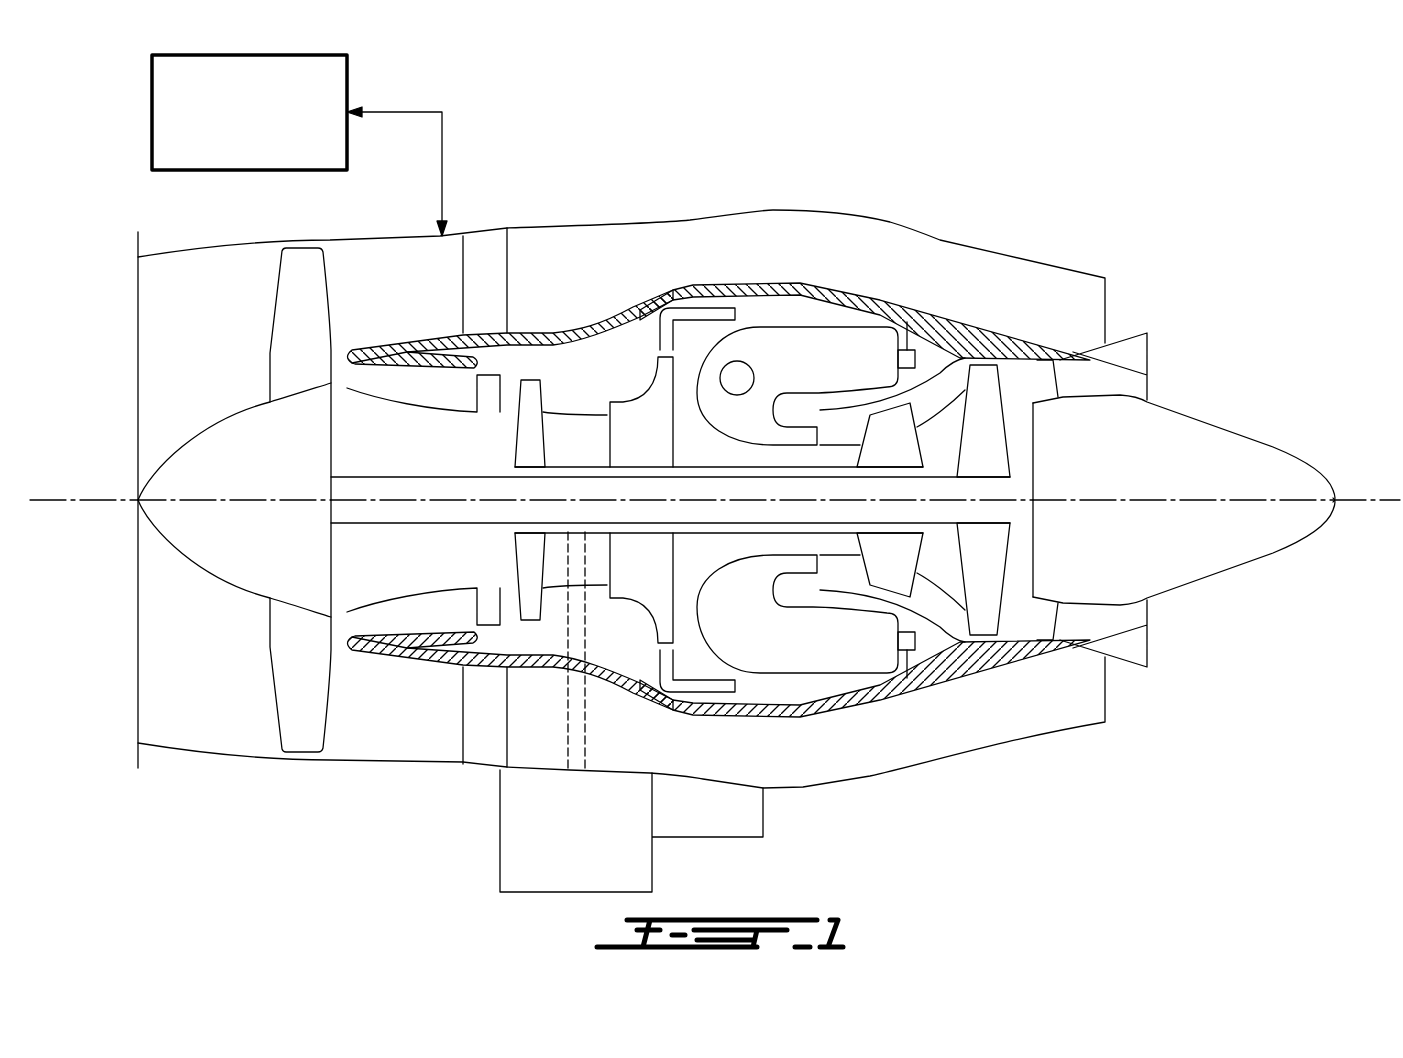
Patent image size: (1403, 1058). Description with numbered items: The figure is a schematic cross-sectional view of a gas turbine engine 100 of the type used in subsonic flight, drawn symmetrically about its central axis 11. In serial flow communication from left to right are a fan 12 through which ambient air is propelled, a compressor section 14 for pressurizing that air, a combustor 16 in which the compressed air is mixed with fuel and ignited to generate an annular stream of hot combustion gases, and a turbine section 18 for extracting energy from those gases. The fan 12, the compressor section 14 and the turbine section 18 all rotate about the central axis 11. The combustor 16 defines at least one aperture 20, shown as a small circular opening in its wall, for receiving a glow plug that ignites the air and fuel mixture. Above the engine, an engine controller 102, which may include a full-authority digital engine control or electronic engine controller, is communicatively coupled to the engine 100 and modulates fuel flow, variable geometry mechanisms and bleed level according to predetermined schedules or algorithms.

The engine 100 is at (1001, 198).
The engine controller 102 is at (150, 112).
The central axis 11 is at (1375, 497).
The fan 12 is at (288, 660).
The compressor section 14 is at (565, 395).
The combustor 16 is at (798, 348).
The turbine section 18 is at (928, 572).
The aperture 20 is at (737, 378).